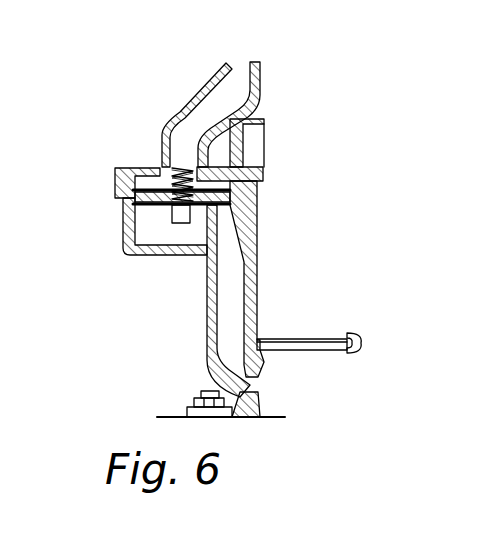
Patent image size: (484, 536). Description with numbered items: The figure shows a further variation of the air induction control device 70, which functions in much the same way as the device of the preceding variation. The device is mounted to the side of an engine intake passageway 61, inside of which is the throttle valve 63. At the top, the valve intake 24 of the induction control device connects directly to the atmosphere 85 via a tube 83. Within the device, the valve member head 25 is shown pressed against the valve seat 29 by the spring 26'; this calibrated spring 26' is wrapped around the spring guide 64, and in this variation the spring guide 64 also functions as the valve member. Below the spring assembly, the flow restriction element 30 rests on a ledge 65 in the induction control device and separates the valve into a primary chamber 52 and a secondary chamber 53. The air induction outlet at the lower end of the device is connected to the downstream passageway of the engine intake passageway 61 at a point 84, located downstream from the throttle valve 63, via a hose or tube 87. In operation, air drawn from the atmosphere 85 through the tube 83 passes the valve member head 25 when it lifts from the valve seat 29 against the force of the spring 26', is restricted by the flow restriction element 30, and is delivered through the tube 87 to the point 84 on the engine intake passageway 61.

The atmosphere 85 is at (233, 58).
The tube 83 is at (200, 92).
The valve intake 24 is at (182, 136).
The valve seat 29 is at (200, 160).
The valve member head 25 is at (165, 167).
The primary chamber 52 is at (225, 191).
The spring guide 64 is at (155, 170).
The spring 26' is at (108, 231).
The flow restriction element 30 is at (155, 225).
The ledge 65 is at (233, 188).
The engine intake passageway 61 is at (283, 315).
The secondary chamber 53 is at (207, 253).
The throttle valve 63 is at (300, 350).
The tube 87 is at (207, 340).
The air induction control device 70 is at (43, 300).
The point 84 is at (260, 384).